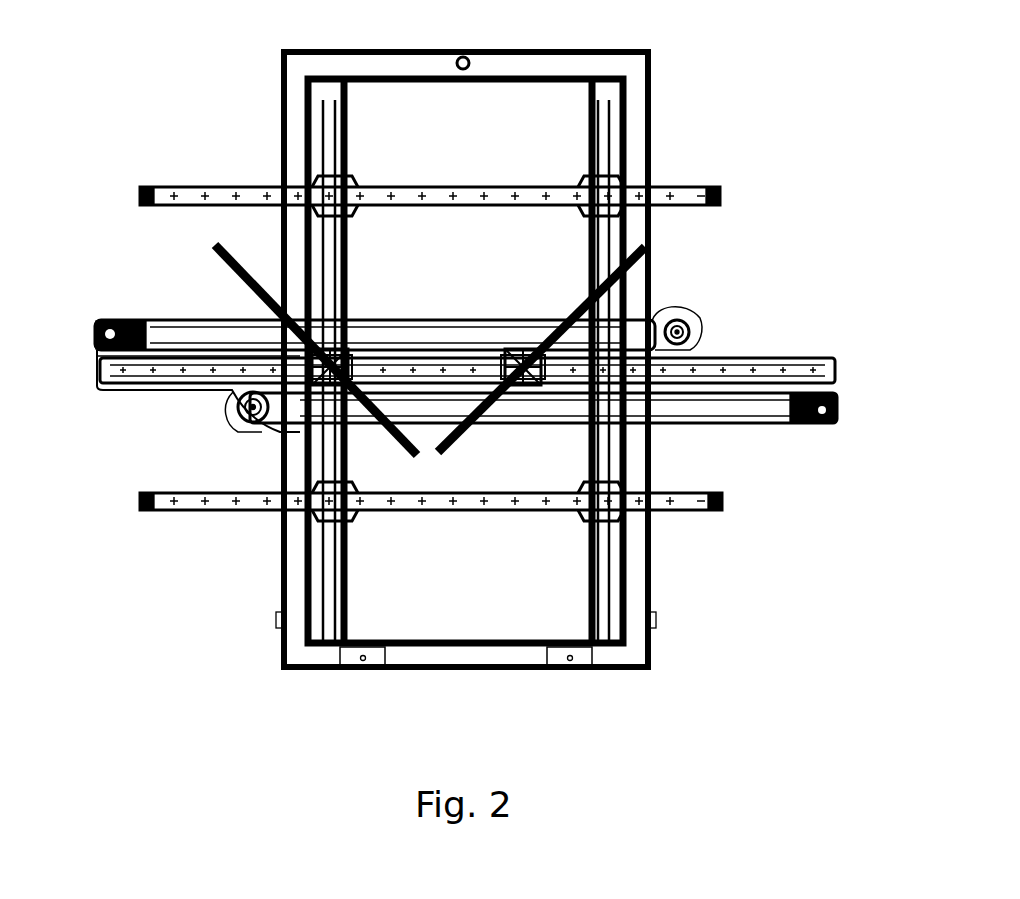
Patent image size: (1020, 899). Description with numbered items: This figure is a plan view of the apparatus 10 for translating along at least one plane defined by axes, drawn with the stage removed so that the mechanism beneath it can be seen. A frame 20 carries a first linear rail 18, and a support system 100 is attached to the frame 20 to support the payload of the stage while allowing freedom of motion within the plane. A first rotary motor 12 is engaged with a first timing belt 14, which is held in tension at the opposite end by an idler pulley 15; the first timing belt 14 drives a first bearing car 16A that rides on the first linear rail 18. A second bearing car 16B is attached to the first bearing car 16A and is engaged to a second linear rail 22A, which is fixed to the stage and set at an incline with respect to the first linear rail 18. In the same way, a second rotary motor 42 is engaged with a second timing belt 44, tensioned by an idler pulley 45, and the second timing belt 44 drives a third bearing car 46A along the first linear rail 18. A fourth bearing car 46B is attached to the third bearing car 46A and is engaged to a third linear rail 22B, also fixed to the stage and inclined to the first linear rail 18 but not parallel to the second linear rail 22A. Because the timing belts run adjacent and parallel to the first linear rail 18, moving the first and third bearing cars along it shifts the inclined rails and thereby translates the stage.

The apparatus 10 is at (105, 148).
The frame 20 is at (652, 62).
The support system 100 is at (332, 136).
The first timing belt 14 is at (165, 322).
The idler pulley 15 is at (98, 326).
The first rotary motor 12 is at (676, 320).
The first linear rail 18 is at (836, 365).
The second timing belt 44 is at (730, 425).
The idler pulley 45 is at (838, 424).
The second rotary motor 42 is at (258, 438).
The second linear rail 22A is at (240, 300).
The third linear rail 22B is at (470, 430).
The first bearing car 16A is at (378, 352).
The second bearing car 16B is at (338, 352).
The third bearing car 46A is at (510, 352).
The fourth bearing car 46B is at (528, 352).